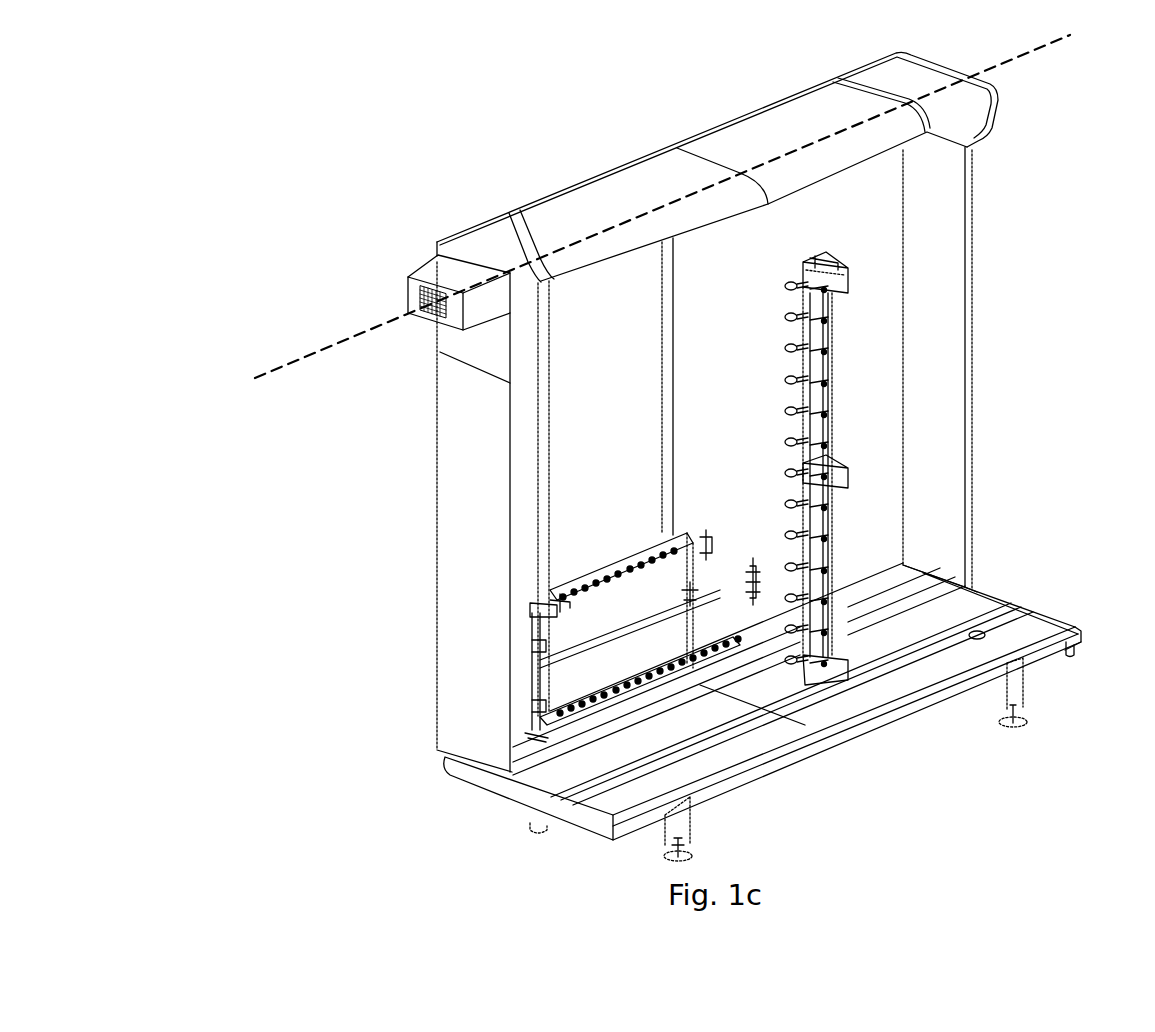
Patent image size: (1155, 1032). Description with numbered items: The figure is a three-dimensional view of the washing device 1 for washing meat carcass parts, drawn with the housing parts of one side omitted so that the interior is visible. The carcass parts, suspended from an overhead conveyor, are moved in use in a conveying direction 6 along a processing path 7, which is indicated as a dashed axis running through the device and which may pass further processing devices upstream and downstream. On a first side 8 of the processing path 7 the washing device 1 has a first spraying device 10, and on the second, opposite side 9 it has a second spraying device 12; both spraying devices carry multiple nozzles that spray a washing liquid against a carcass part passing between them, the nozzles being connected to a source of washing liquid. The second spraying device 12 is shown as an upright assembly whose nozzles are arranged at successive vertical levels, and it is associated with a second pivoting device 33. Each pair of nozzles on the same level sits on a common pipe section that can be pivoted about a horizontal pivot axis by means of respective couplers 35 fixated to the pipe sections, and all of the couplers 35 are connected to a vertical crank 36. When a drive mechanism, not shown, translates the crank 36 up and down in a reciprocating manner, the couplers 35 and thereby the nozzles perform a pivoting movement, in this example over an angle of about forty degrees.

The washing device 1 is at (222, 190).
The conveying direction 6 is at (617, 148).
The processing path 7 is at (322, 352).
The first side 8 is at (363, 308).
The second side 9 is at (410, 370).
The first spraying device 10 is at (577, 538).
The second spraying device 12 is at (882, 363).
The second pivoting device 33 is at (845, 297).
The couplers 35 is at (820, 366).
The crank 36 is at (827, 442).